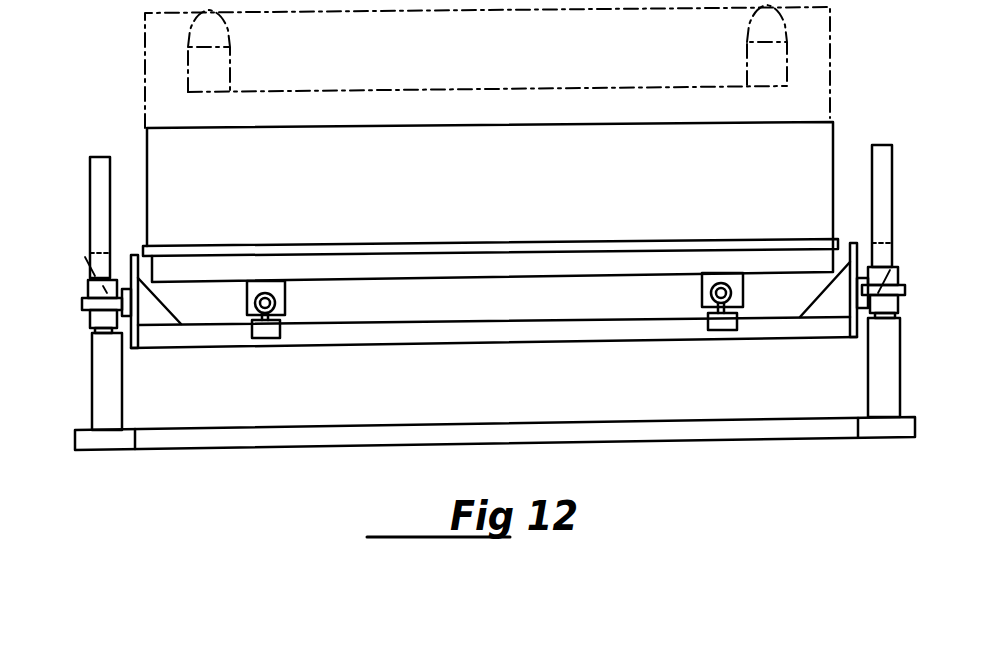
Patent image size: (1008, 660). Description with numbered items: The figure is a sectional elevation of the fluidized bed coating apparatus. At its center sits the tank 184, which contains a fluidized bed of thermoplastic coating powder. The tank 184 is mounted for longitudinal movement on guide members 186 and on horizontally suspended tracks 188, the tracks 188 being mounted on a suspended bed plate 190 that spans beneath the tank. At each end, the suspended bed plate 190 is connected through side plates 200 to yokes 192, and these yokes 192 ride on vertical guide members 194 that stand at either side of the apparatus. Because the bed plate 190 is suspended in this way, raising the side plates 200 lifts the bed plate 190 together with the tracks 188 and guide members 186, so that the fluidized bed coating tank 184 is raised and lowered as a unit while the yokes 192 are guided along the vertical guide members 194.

The tank 184 is at (825, 143).
The guide members 186 is at (284, 292).
The horizontally suspended tracks 188 is at (268, 338).
The suspended bed plate 190 is at (474, 331).
The yokes 192 is at (83, 303).
The vertical guide members 194 is at (98, 185).
The side plates 200 is at (137, 311).